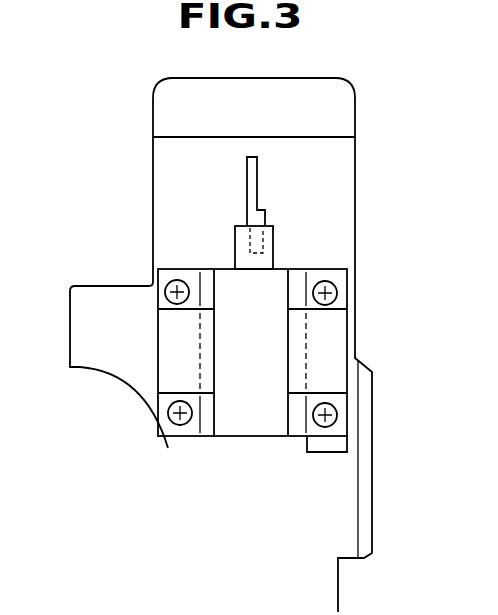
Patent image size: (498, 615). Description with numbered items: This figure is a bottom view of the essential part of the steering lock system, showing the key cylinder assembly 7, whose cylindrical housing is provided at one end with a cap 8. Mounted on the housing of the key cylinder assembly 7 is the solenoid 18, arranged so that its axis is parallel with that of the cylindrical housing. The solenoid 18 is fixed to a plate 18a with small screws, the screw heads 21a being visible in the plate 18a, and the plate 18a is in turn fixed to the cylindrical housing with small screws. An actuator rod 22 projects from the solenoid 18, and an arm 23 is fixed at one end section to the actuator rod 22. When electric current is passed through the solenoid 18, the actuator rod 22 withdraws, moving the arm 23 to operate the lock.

The key cylinder assembly 7 is at (146, 215).
The cap 8 is at (157, 101).
The solenoid 18 is at (250, 431).
The plate 18a is at (298, 268).
The screws 21a is at (180, 284).
The actuator rod 22 is at (273, 247).
The arm 23 is at (264, 212).